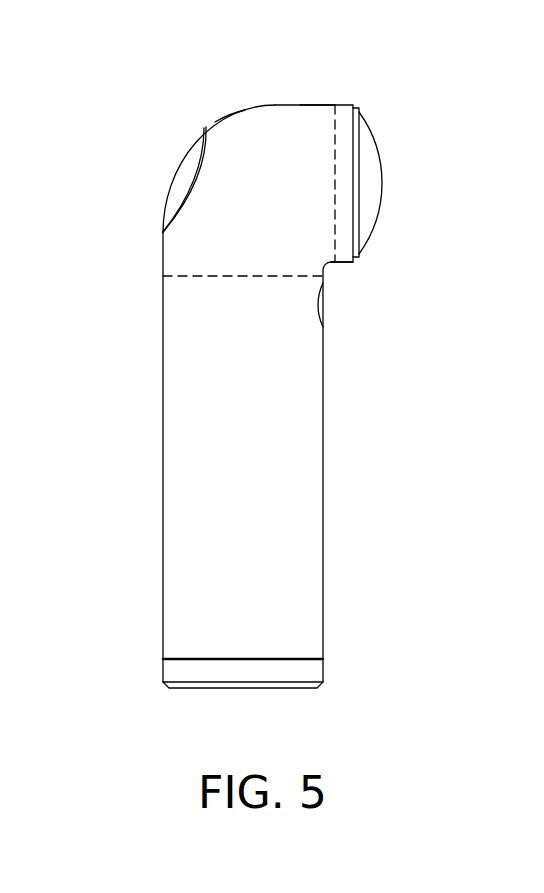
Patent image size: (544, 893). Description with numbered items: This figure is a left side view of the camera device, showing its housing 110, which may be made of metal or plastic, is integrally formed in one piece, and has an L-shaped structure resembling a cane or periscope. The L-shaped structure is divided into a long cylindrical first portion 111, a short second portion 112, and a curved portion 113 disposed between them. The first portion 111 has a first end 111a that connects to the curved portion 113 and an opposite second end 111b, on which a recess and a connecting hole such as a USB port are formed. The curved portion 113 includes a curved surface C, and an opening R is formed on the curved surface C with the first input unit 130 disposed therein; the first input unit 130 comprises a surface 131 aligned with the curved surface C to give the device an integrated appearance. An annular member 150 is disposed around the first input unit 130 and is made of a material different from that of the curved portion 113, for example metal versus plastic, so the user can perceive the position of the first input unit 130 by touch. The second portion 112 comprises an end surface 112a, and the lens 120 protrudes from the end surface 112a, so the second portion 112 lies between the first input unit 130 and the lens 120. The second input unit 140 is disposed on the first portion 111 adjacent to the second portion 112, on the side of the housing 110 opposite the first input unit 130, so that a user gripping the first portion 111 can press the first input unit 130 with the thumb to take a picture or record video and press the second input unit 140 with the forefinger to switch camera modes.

The housing 110 is at (160, 470).
The first portion 111 is at (185, 423).
The first end 111a is at (243, 275).
The second end 111b is at (243, 690).
The second portion 112 is at (343, 148).
The end surface 112a is at (355, 261).
The curved portion 113 is at (276, 125).
The lens 120 is at (367, 215).
The first input unit 130 is at (182, 175).
The surface 131 is at (186, 150).
The second input unit 140 is at (322, 302).
The annular member 150 is at (163, 232).
The curved surface C is at (226, 118).
The opening R is at (167, 212).